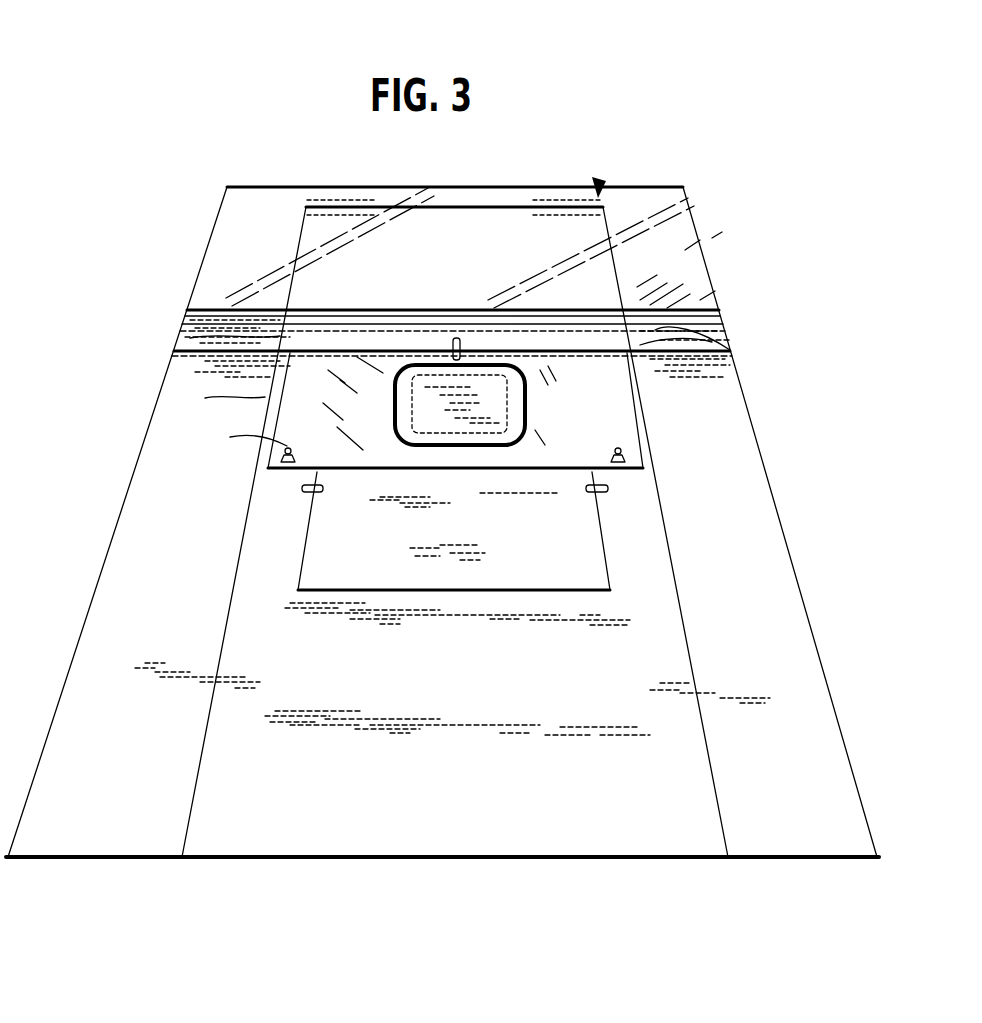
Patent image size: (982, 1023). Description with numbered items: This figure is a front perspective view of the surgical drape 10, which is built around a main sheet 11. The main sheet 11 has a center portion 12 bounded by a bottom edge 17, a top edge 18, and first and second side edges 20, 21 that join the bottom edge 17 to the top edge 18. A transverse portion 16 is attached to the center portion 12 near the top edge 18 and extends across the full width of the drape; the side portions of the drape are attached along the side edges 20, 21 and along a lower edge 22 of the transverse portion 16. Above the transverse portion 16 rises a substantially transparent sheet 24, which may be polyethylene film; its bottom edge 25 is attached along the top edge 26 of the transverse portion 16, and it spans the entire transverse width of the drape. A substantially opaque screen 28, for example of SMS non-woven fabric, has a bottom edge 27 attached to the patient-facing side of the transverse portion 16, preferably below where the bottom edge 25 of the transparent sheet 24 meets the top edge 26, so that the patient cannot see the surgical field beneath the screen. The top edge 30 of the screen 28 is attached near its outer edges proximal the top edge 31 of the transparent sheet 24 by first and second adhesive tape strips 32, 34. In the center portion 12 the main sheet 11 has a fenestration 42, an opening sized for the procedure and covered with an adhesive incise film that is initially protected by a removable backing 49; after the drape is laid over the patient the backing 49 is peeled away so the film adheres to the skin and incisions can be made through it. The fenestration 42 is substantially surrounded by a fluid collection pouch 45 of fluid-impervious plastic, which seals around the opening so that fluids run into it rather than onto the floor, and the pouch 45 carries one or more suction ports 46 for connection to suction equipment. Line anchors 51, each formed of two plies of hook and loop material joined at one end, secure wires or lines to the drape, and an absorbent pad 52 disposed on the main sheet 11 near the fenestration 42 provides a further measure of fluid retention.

The surgical drape 10 is at (287, 592).
The main sheet 11 is at (802, 522).
The center portion 12 is at (586, 653).
The transverse portion 16 is at (435, 330).
The bottom edge 17 is at (442, 897).
The top edge 18 is at (614, 264).
The first side edge 20 is at (388, 532).
The second side edge 21 is at (570, 531).
The lower edge 22 is at (532, 399).
The substantially transparent sheet 24 is at (695, 260).
The bottom edge 25 is at (724, 345).
The top edge 26 is at (709, 322).
The bottom edge 27 is at (572, 397).
The substantially opaque screen 28 is at (458, 223).
The top edge 30 is at (454, 166).
The top edge 31 is at (455, 157).
The first adhesive tape strip 32 is at (445, 174).
The second adhesive tape strip 34 is at (627, 145).
The fenestration 42 is at (335, 344).
The fluid collection pouch 45 is at (195, 369).
The suction port 46 is at (457, 439).
The removable backing 49 is at (357, 283).
The line anchor 51 is at (465, 364).
The absorbent pad 52 is at (523, 672).